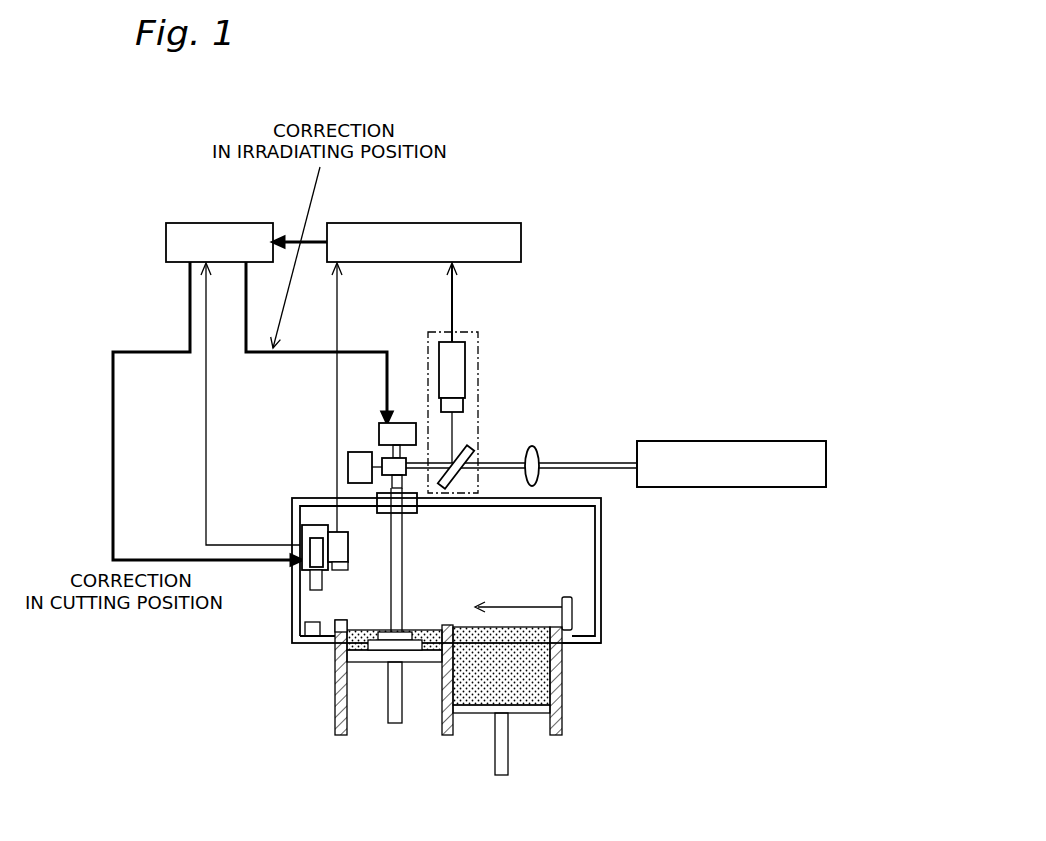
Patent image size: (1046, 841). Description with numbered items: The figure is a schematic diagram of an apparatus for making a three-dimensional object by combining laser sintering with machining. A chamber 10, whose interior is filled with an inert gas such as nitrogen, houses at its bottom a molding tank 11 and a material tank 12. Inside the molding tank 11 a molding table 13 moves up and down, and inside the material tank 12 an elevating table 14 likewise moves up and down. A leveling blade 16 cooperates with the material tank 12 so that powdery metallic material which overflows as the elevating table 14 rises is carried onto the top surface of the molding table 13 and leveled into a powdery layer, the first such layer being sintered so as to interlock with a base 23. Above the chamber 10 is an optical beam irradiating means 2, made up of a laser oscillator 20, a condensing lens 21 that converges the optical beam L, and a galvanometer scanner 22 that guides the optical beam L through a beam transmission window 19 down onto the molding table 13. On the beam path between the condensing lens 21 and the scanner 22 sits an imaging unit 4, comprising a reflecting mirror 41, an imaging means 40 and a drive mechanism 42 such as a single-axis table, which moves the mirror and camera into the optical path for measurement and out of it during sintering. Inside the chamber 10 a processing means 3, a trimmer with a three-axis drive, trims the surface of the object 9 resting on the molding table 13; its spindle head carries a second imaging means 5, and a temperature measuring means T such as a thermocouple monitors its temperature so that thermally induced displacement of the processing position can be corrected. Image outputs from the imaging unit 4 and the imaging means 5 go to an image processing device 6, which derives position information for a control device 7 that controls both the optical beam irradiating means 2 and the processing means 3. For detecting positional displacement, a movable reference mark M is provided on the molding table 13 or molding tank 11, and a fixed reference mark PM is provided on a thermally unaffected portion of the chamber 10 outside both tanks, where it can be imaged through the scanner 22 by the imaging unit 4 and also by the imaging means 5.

The optical beam irradiating means 2 is at (797, 437).
The laser oscillator 20 is at (826, 467).
The condensing lens 21 is at (537, 452).
The scanner 22 is at (387, 460).
The optical beam L is at (492, 463).
The imaging unit 4 is at (472, 382).
The imaging means 40 is at (460, 375).
The reflecting mirror 41 is at (496, 428).
The drive mechanism 42 is at (430, 332).
The image processing device 6 is at (432, 223).
The control device 7 is at (186, 225).
The processing means 3 is at (286, 557).
The temperature measuring means T is at (306, 566).
The imaging means 5 is at (335, 538).
The object 9 is at (400, 632).
The beam transmission window 19 is at (408, 515).
The chamber 10 is at (597, 525).
The molding tank 11 is at (335, 683).
The movable reference mark M is at (342, 623).
The fixed reference mark PM is at (305, 627).
The molding table 13 is at (380, 656).
The base 23 is at (406, 645).
The material tank 12 is at (557, 685).
The elevating table 14 is at (483, 706).
The leveling blade 16 is at (567, 605).